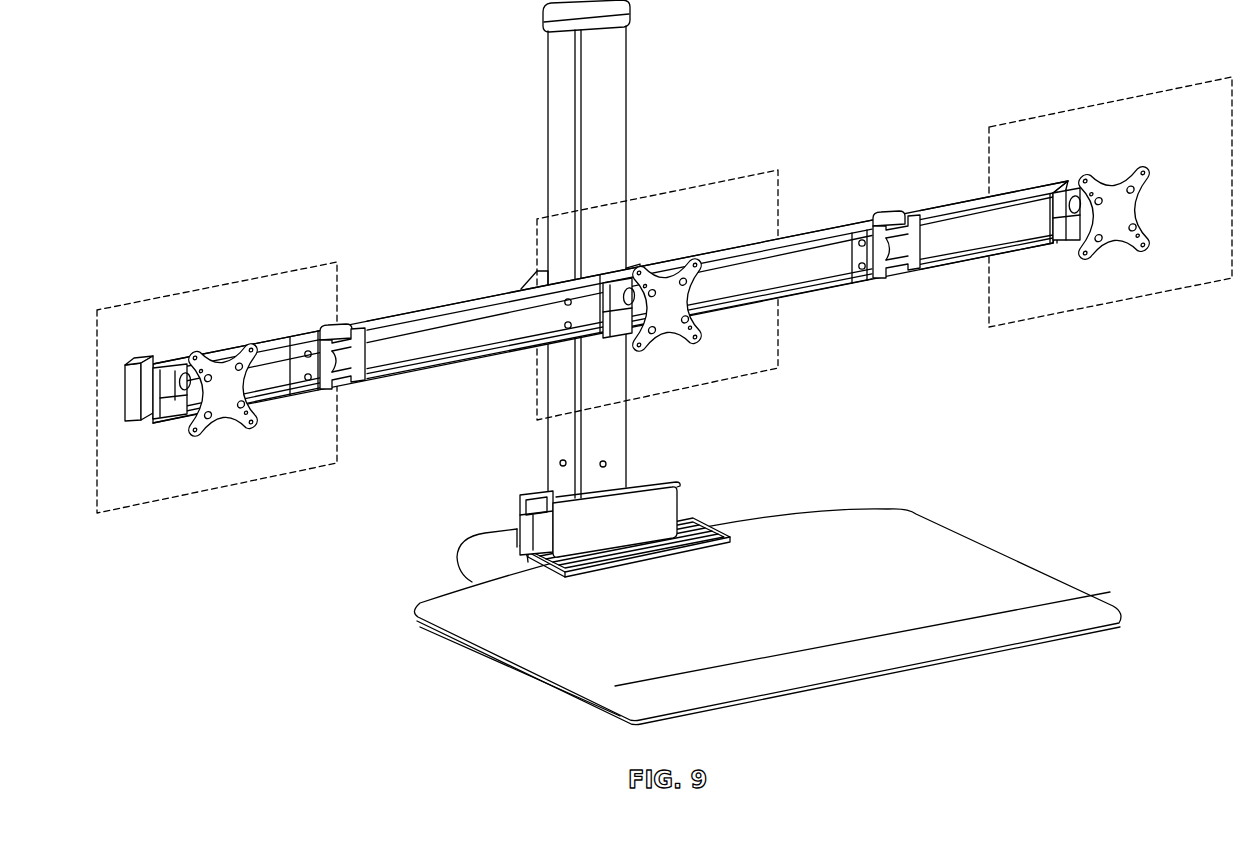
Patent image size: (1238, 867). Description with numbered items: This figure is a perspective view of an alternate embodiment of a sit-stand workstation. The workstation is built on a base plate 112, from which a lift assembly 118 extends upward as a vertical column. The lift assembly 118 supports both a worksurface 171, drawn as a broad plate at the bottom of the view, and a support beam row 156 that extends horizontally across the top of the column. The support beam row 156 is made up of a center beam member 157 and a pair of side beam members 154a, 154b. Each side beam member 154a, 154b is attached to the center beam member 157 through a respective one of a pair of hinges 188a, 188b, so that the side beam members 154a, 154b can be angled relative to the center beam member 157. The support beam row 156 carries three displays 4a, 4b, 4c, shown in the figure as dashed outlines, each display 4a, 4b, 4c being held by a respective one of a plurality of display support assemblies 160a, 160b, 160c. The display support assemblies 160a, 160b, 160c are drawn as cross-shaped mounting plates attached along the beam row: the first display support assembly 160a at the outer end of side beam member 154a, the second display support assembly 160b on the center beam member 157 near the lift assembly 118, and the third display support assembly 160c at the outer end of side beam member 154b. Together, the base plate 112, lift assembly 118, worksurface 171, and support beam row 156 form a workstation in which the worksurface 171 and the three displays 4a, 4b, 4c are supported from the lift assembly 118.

The display 4a is at (262, 275).
The display 4b is at (737, 178).
The display 4c is at (1112, 100).
The base plate 112 is at (497, 545).
The lift assembly 118 is at (650, 120).
The side beam member 154a is at (292, 368).
The side beam member 154b is at (963, 233).
The support beam row 156 is at (93, 425).
The center beam member 157 is at (845, 253).
The display support assembly 160a is at (230, 440).
The display support assembly 160b is at (680, 360).
The display support assembly 160c is at (1115, 261).
The worksurface 171 is at (975, 558).
The hinge 188a is at (343, 318).
The hinge 188b is at (890, 201).